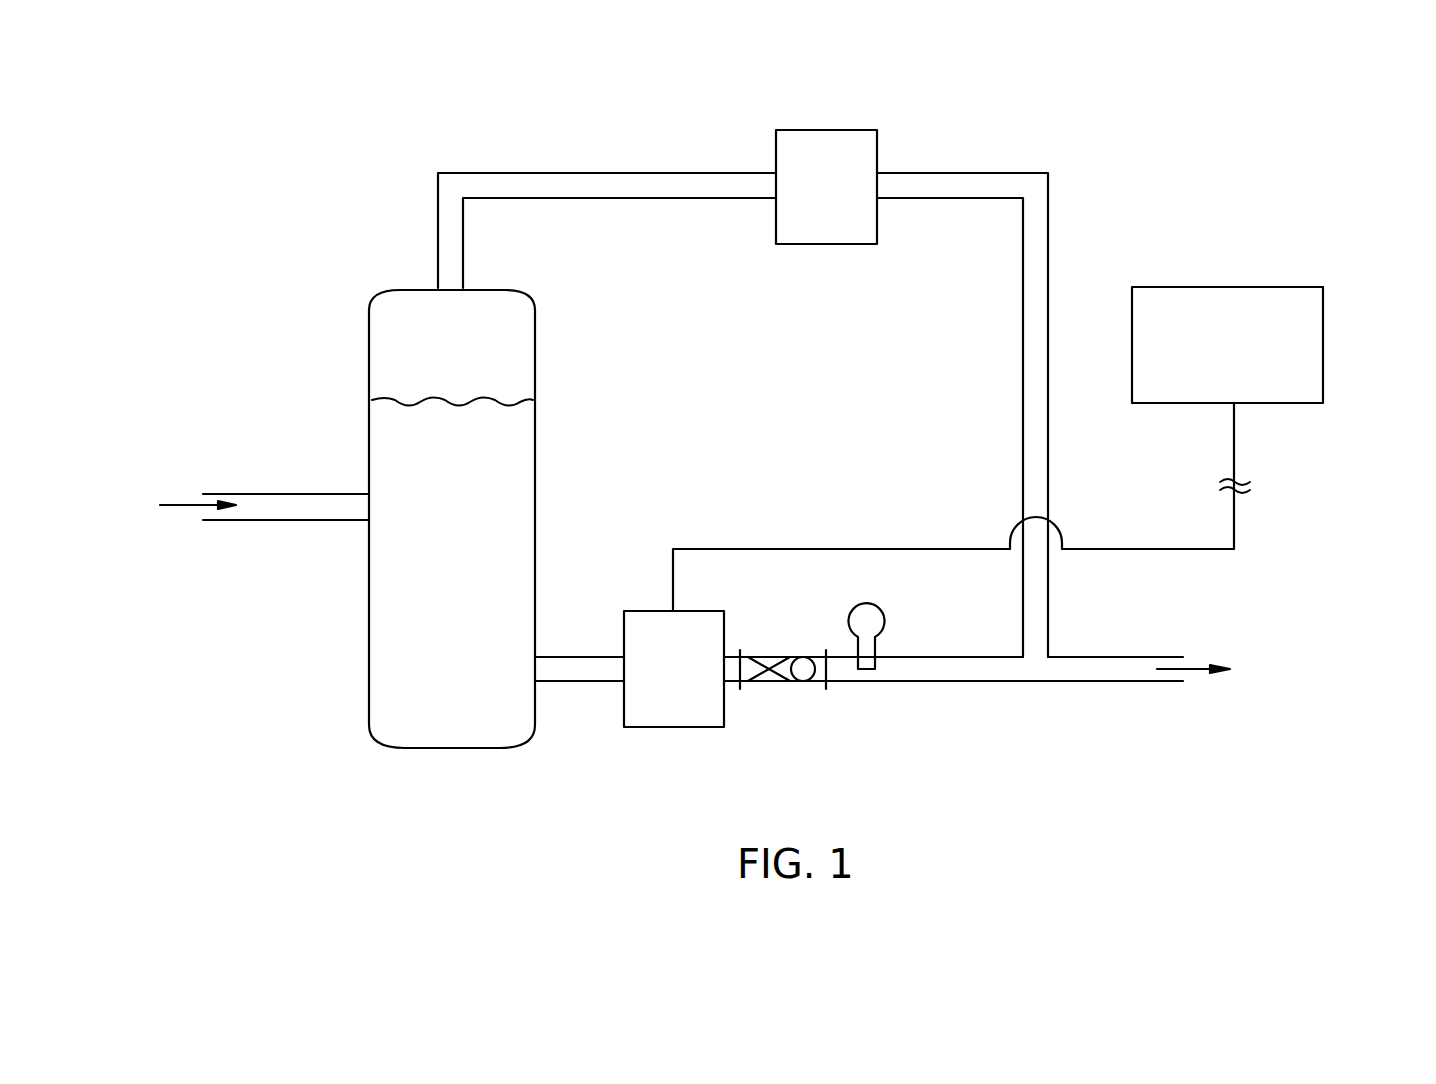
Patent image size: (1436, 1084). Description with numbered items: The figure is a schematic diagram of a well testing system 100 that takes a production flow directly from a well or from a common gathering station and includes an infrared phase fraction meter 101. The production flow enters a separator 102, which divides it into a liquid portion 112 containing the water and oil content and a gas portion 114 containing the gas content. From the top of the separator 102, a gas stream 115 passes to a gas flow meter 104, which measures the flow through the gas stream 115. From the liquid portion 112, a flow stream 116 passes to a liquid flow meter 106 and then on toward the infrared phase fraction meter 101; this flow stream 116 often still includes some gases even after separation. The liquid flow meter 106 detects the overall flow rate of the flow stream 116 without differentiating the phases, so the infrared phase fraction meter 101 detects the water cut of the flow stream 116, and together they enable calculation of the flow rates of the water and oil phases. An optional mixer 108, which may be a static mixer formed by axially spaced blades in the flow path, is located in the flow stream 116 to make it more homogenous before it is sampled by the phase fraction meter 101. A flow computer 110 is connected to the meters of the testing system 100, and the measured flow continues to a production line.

The well testing system 100 is at (272, 204).
The infrared phase fraction meter 101 is at (884, 617).
The separator 102 is at (369, 669).
The gas flow meter 104 is at (840, 128).
The liquid flow meter 106 is at (655, 729).
The mixer 108 is at (790, 683).
The flow computer 110 is at (1282, 285).
The liquid portion 112 is at (471, 577).
The gas portion 114 is at (471, 355).
The gas stream 115 is at (603, 172).
The flow stream 116 is at (572, 683).